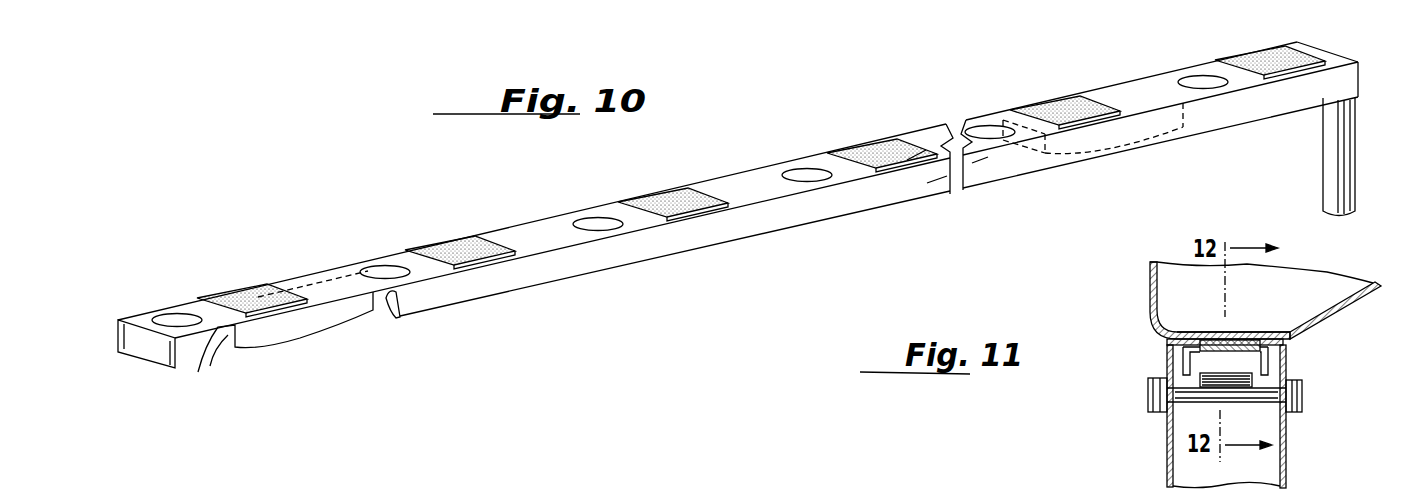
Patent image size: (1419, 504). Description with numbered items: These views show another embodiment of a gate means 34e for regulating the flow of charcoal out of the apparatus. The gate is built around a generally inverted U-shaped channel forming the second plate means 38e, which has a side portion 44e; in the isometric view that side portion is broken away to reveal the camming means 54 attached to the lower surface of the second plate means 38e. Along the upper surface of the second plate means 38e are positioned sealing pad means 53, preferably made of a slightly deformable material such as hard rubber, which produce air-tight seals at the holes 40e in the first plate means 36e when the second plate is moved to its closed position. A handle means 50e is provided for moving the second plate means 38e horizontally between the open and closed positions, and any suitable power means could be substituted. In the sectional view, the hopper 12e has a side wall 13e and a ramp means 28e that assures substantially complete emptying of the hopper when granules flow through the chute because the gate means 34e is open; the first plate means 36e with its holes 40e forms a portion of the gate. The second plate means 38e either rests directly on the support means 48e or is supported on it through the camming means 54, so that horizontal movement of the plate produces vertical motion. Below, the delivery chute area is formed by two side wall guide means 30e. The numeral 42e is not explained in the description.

In FIG. 11, the hopper 12e is at (1330, 292).
In FIG. 11, the side wall 13e is at (1152, 278).
In FIG. 11, the ramp means 28e is at (1353, 305).
In FIG. 11, the side wall guide means 30e is at (1165, 452).
In FIG. 11, the gate means 34e is at (1163, 345).
In FIG. 11, the first plate means 36e is at (1160, 322).
In FIG. 10, the second plate means 38e is at (543, 242).
In FIG. 11, the second plate means 38e is at (1286, 362).
In FIG. 11, the holes 40e is at (1235, 332).
In FIG. 10, the holes 42e is at (170, 316).
In FIG. 10, the side portion 44e is at (772, 218).
In FIG. 11, the support means 48e is at (1287, 427).
In FIG. 10, the handle means 50e is at (1327, 162).
In FIG. 10, the sealing pad means 53 is at (245, 302).
In FIG. 11, the sealing pad means 53 is at (1290, 340).
In FIG. 10, the camming means 54 is at (303, 330).
In FIG. 11, the camming means 54 is at (1210, 363).